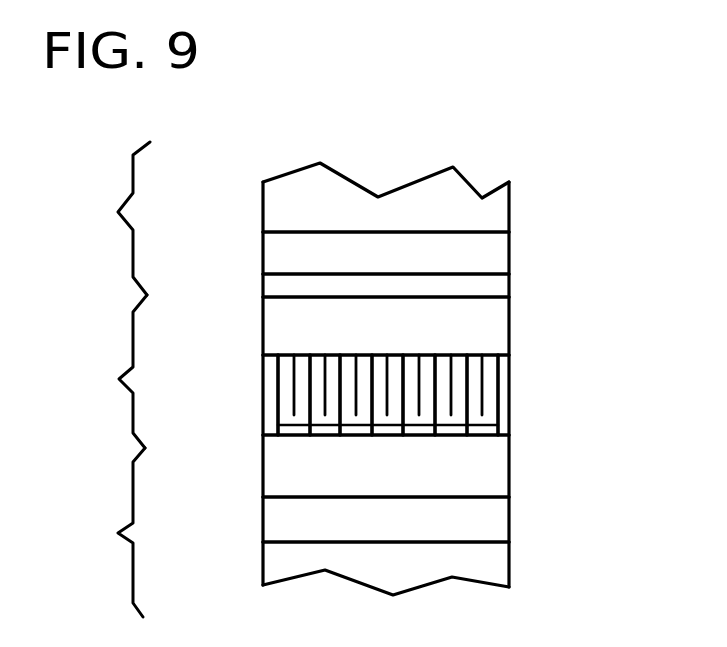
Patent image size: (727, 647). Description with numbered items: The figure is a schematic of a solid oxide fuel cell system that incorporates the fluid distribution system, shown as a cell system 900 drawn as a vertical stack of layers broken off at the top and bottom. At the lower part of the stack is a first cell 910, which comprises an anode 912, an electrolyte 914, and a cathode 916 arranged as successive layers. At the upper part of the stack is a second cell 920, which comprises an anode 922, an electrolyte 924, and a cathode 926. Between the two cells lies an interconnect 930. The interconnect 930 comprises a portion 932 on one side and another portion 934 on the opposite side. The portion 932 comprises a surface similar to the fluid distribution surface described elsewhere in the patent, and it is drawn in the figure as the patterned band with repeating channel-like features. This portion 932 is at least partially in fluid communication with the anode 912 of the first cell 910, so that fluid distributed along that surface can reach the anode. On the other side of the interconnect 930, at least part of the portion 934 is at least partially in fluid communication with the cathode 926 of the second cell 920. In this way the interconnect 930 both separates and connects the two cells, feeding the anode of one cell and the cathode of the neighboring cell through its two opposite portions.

The cell system 900 is at (283, 150).
The first cell 910 is at (96, 532).
The anode 912 is at (263, 463).
The electrolyte 914 is at (263, 517).
The cathode 916 is at (263, 568).
The second cell 920 is at (99, 218).
The anode 922 is at (510, 208).
The electrolyte 924 is at (510, 255).
The cathode 926 is at (510, 283).
The interconnect 930 is at (97, 371).
The portion 932 is at (263, 392).
The portion 934 is at (510, 330).